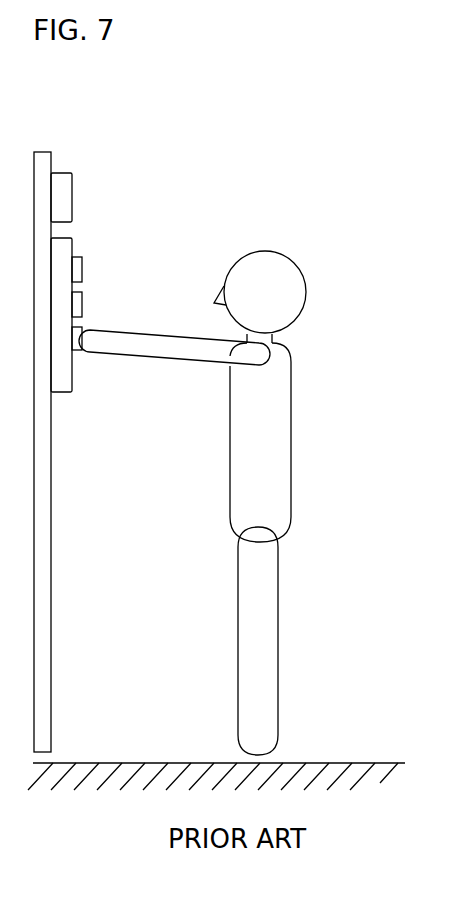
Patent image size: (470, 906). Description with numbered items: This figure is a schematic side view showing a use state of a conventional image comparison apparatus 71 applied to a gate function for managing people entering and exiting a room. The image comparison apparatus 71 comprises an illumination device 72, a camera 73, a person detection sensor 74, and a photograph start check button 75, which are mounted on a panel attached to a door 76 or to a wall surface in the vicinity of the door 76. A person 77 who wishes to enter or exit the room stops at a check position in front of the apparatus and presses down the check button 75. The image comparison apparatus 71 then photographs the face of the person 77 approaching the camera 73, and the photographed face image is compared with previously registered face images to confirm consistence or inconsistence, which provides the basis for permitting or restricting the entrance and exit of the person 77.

The image comparison apparatus 71 is at (156, 128).
The illumination device 72 is at (67, 188).
The camera 73 is at (83, 265).
The person detection sensor 74 is at (81, 303).
The photograph start check button 75 is at (78, 350).
The door 76 is at (43, 516).
The person 77 is at (292, 412).